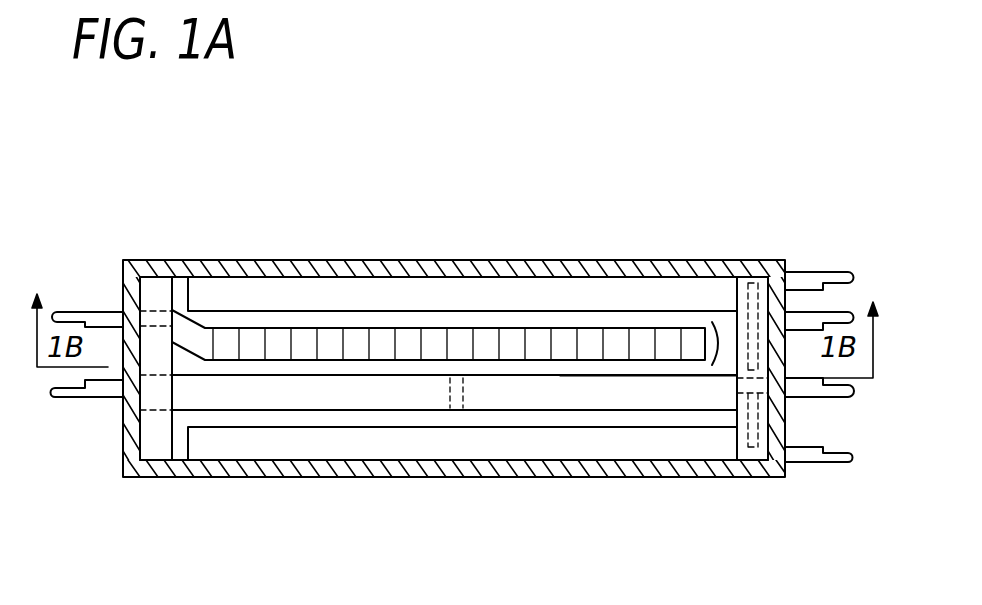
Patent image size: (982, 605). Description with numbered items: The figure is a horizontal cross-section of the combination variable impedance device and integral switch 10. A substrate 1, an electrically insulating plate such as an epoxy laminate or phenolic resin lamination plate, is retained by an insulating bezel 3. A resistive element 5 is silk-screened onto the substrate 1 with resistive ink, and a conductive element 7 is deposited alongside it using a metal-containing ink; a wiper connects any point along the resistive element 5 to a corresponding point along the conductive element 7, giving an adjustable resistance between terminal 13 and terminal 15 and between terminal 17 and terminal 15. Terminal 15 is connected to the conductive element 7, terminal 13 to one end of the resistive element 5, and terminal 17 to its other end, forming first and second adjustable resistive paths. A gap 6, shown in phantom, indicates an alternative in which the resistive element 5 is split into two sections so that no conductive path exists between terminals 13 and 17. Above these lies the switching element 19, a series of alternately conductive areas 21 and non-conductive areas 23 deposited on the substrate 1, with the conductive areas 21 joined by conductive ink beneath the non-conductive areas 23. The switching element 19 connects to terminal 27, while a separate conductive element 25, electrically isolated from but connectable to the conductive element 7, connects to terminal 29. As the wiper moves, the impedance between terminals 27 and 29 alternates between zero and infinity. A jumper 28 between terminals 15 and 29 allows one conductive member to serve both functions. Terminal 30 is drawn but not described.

The substrate 1 is at (336, 372).
The bezel 3 is at (474, 472).
The resistive element 5 is at (617, 393).
The gap 6 is at (450, 393).
The conductive element 7 is at (230, 450).
The combination variable impedance device and integral switch 10 is at (234, 226).
The terminal 13 is at (68, 397).
The terminal 15 is at (838, 462).
The terminal 17 is at (830, 397).
The switching element 19 is at (728, 340).
The conductive areas 21 is at (447, 338).
The non-conductive areas 23 is at (577, 338).
The conductive element 25 is at (287, 283).
The terminal 27 is at (78, 310).
The jumper 28 is at (757, 292).
The terminal 29 is at (832, 270).
The lead 30 is at (838, 312).